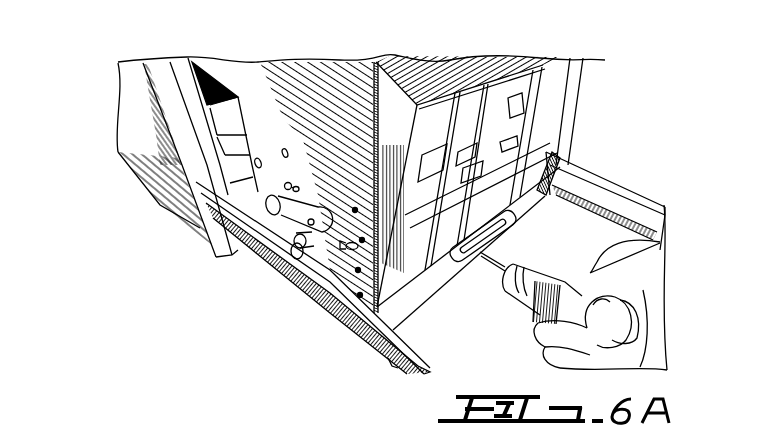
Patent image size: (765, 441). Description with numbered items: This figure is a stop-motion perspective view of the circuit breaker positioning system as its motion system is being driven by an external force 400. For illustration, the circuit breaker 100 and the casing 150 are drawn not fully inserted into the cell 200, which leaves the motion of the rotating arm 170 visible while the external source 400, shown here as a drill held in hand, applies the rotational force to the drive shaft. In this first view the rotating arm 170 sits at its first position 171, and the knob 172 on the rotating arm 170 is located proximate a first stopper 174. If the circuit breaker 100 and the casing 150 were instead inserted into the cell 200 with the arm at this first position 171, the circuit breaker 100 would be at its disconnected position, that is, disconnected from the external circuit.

The circuit breaker 100 is at (450, 68).
The casing 150 is at (280, 65).
The rotating arm 170 is at (302, 263).
The first position 171 is at (262, 190).
The knob 172 is at (268, 220).
The first stopper 174 is at (303, 182).
The cell 200 is at (150, 97).
The external force 400 is at (543, 272).